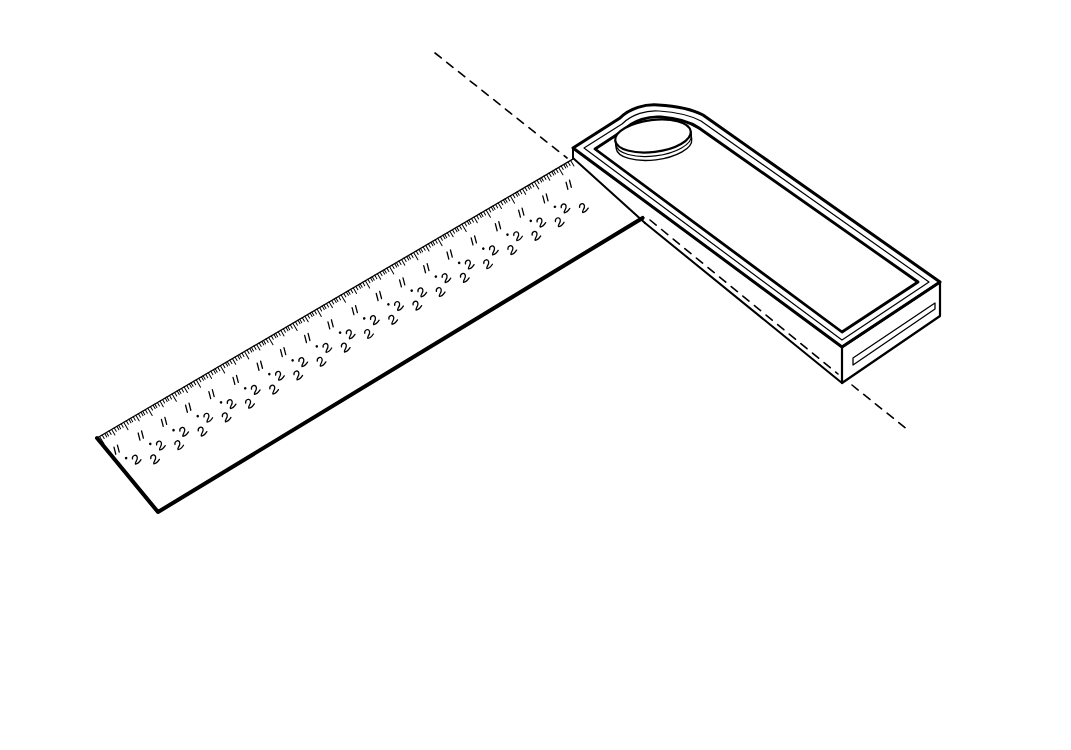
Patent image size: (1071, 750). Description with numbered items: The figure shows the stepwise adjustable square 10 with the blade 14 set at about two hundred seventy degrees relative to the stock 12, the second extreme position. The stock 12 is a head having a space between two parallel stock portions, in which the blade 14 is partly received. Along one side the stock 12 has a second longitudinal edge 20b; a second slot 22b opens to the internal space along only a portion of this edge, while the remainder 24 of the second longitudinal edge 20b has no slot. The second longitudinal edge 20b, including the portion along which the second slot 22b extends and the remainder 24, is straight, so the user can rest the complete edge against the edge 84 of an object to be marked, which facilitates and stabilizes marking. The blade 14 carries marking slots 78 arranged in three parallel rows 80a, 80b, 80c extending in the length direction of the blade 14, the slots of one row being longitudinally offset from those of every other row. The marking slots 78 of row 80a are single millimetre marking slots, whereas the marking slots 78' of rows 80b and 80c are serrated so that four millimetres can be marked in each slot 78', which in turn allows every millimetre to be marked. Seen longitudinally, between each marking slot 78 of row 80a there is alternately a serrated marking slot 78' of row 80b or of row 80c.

The square tool 10 is at (387, 162).
The stock 12 is at (874, 387).
The blade 14 is at (227, 440).
The second longitudinal edge 20b is at (709, 260).
The second slot 22b is at (643, 220).
The remainder of the second longitudinal edge 24 is at (786, 318).
The marking slots 78 is at (359, 318).
The serrated marking slots 78' is at (381, 326).
The first row 80a is at (125, 462).
The second row 80b is at (121, 467).
The third row 80c is at (152, 466).
The edge of an object to be marked 84 is at (538, 136).